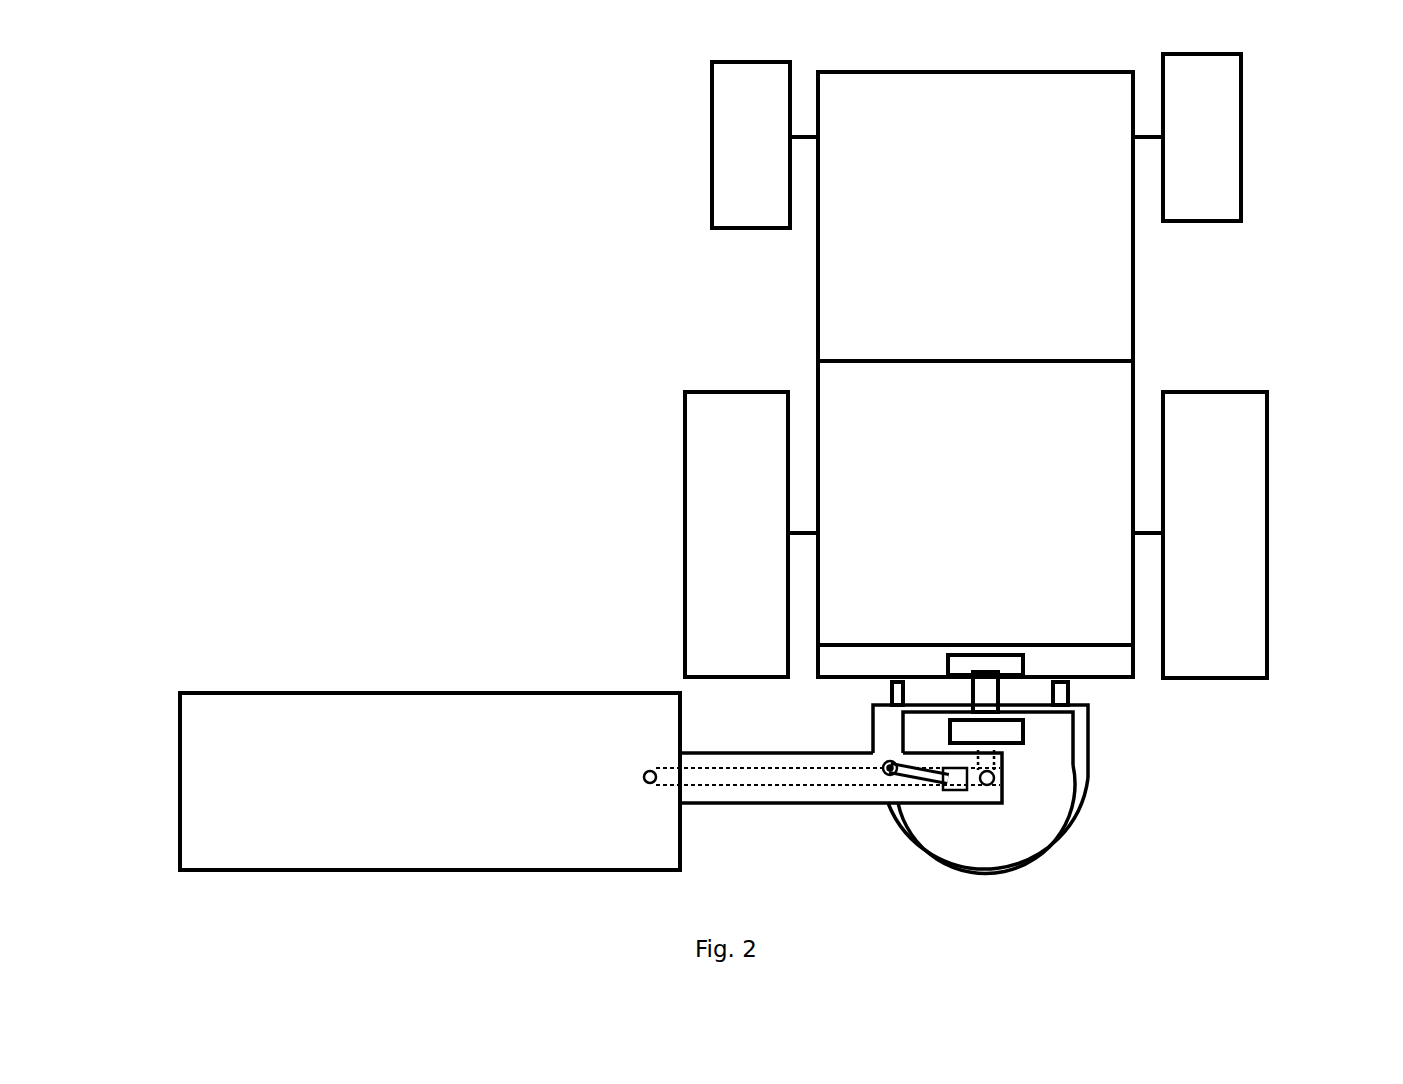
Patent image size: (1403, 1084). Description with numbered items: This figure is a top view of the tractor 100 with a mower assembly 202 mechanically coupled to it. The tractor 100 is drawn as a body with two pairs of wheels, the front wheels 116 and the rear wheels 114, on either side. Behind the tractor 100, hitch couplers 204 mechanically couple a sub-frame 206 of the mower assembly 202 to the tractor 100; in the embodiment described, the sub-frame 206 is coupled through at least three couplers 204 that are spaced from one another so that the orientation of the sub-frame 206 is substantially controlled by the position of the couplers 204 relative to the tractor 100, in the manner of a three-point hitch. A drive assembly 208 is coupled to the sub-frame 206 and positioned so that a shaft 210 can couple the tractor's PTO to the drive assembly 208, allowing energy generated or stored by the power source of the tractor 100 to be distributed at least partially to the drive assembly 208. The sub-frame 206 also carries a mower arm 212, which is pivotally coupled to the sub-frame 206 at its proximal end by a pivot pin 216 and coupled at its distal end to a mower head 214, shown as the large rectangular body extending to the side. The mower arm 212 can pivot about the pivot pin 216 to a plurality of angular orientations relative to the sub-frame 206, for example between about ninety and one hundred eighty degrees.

The tractor 100 is at (620, 246).
The front wheels 116 is at (745, 149).
The rear wheels 114 is at (722, 430).
The mower assembly 202 is at (397, 599).
The hitch couplers 204 is at (890, 690).
The sub-frame 206 is at (1060, 738).
The drive assembly 208 is at (973, 732).
The shaft 210 is at (993, 690).
The mower arm 212 is at (805, 795).
The mower head 214 is at (383, 783).
The pivot pin 216 is at (995, 778).